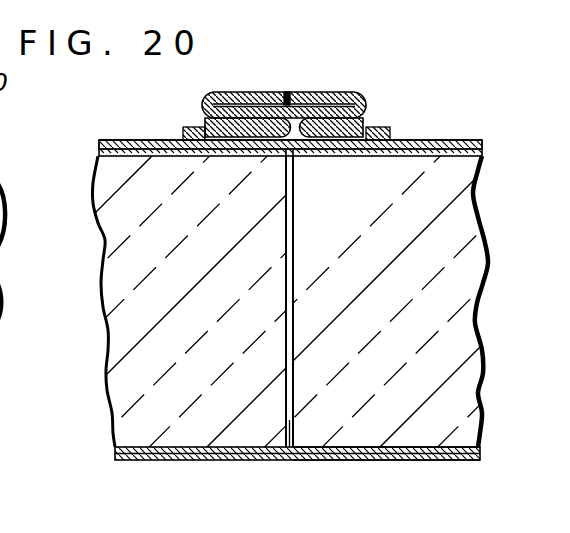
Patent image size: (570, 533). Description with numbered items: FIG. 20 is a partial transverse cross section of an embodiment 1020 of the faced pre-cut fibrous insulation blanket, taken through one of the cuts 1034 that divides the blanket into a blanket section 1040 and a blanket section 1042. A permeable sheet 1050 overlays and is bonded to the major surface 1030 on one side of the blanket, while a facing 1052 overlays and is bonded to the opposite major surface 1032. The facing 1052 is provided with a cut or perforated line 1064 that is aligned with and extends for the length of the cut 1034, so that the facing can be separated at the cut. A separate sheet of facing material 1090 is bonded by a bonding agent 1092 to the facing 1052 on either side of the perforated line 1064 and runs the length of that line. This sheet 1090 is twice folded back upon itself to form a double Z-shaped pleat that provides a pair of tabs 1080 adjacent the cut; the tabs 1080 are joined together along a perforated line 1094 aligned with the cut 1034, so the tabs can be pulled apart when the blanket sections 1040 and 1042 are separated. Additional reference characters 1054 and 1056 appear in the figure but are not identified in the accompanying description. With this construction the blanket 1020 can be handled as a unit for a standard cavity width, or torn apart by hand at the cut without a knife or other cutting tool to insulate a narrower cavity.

The faced pre-cut fibrous insulation blanket 1020 is at (329, 70).
The major surface 1030 is at (413, 461).
The major surface 1032 is at (443, 139).
The cut 1034 is at (284, 420).
The blanket section 1040 is at (215, 313).
The blanket section 1042 is at (405, 313).
The permeable sheet 1050 is at (176, 469).
The facing 1052 is at (113, 134).
The lower face sheet of second panel 1054 is at (363, 447).
The adhesive layer 1056 is at (162, 156).
The perforated line 1064 is at (303, 150).
The tabs 1080 is at (312, 77).
The sheet of facing material 1090 is at (351, 78).
The bonding agent 1092 is at (378, 136).
The perforated line 1094 is at (278, 81).